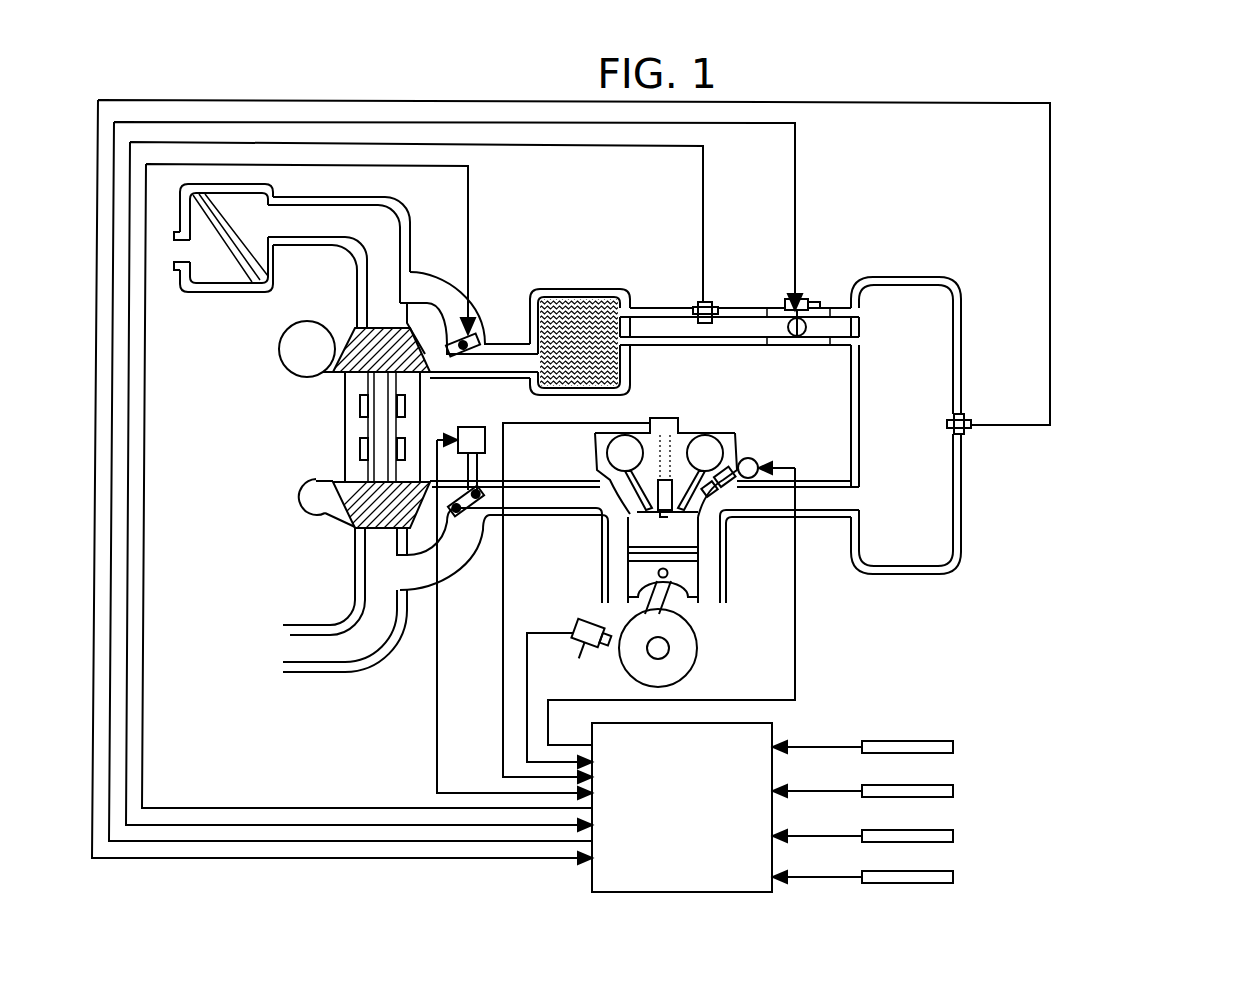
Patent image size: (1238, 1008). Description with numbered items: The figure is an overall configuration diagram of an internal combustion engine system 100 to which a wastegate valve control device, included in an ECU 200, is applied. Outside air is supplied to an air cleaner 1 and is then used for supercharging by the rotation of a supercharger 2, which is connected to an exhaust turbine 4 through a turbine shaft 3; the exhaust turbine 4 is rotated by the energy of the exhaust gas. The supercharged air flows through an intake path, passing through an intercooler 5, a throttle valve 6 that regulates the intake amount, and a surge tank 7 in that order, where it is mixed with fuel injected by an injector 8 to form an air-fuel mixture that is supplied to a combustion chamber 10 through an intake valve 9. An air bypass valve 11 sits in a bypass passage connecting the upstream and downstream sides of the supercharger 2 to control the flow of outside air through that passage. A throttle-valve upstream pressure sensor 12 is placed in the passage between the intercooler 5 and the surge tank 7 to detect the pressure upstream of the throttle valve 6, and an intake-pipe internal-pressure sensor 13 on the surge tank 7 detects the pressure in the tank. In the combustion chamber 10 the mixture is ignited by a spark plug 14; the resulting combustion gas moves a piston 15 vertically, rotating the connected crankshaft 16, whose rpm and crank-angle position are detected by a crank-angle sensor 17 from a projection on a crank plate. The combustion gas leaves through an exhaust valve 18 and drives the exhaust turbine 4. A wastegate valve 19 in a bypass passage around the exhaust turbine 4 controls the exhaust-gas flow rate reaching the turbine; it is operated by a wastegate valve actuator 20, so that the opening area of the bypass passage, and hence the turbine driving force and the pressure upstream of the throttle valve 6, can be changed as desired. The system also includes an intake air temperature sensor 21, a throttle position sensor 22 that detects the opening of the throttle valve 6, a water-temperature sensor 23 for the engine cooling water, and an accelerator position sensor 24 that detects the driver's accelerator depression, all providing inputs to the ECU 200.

The air cleaner 1 is at (245, 291).
The supercharger 2 is at (367, 348).
The turbine shaft 3 is at (383, 410).
The exhaust turbine 4 is at (377, 510).
The intercooler 5 is at (583, 292).
The throttle valve 6 is at (777, 302).
The surge tank 7 is at (917, 290).
The injector 8 is at (762, 456).
The intake valve 9 is at (712, 522).
The combustion chamber 10 is at (663, 560).
The air bypass valve 11 is at (470, 355).
The throttle-valve upstream pressure sensor 12 is at (693, 302).
The intake-pipe internal-pressure sensor 13 is at (975, 437).
The spark plug 14 is at (672, 470).
The piston 15 is at (697, 578).
The crankshaft 16 is at (682, 661).
The crank-angle sensor 17 is at (572, 623).
The exhaust valve 18 is at (623, 518).
The wastegate valve 19 is at (470, 517).
The wastegate valve actuator 20 is at (464, 446).
The intake air temperature sensor 21 is at (953, 747).
The throttle position sensor 22 is at (953, 791).
The water-temperature sensor 23 is at (953, 836).
The accelerator position sensor 24 is at (953, 877).
The internal combustion engine system 100 is at (1066, 360).
The ECU 200 is at (682, 807).